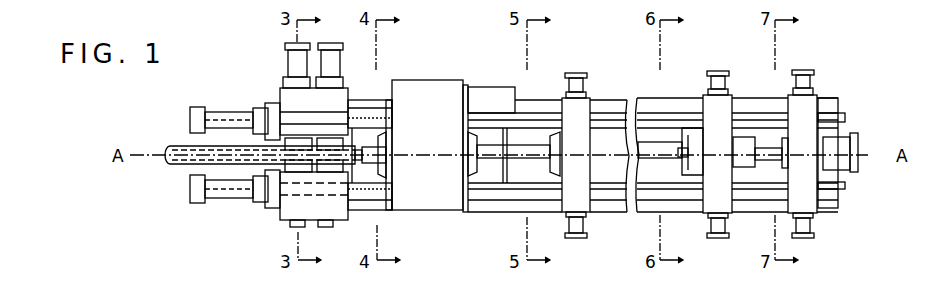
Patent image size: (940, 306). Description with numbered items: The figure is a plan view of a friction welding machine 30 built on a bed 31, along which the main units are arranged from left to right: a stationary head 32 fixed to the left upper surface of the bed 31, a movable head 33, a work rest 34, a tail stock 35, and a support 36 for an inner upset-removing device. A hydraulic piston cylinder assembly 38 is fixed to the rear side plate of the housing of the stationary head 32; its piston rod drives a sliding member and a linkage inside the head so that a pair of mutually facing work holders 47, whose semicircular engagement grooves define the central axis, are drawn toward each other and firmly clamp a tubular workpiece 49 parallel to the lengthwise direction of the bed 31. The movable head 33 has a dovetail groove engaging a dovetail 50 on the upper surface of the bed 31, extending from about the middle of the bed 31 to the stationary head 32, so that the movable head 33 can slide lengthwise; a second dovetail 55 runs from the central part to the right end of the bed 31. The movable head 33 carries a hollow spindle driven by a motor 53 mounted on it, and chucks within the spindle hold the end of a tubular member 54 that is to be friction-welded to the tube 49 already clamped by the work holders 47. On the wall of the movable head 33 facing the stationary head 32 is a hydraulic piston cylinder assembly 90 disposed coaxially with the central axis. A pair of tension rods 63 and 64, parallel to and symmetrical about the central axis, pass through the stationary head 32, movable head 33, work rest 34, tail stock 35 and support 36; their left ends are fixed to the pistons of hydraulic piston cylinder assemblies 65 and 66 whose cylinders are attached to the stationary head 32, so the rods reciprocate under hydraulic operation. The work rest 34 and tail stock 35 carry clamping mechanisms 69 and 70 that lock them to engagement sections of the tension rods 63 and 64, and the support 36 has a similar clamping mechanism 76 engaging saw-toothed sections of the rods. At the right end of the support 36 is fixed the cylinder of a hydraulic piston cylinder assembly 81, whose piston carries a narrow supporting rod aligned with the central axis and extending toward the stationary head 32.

The friction welding machine 30 is at (653, 139).
The bed 31 is at (380, 106).
The stationary head 32 is at (310, 138).
The movable head 33 is at (444, 91).
The work rest 34 is at (578, 109).
The tail stock 35 is at (720, 107).
The support for inner upset-removing device 36 is at (804, 107).
The hydraulic piston cylinder assembly 38 is at (296, 68).
The work holders 47 is at (330, 143).
The tubular workpiece 49 is at (178, 162).
The dovetail 50 is at (368, 193).
The motor 53 is at (490, 95).
The tubular member 54 is at (468, 163).
The dovetail 55 is at (526, 186).
The tension rod 63 is at (307, 122).
The tension rod 64 is at (384, 203).
The hydraulic piston cylinder assembly 65 is at (224, 116).
The hydraulic piston cylinder assembly 66 is at (224, 196).
The clamping mechanism 69 is at (576, 83).
The clamping mechanism 70 is at (716, 79).
The clamping mechanism 76 is at (804, 77).
The hydraulic piston cylinder assembly 81 is at (845, 147).
The hydraulic piston cylinder assembly 90 is at (475, 143).